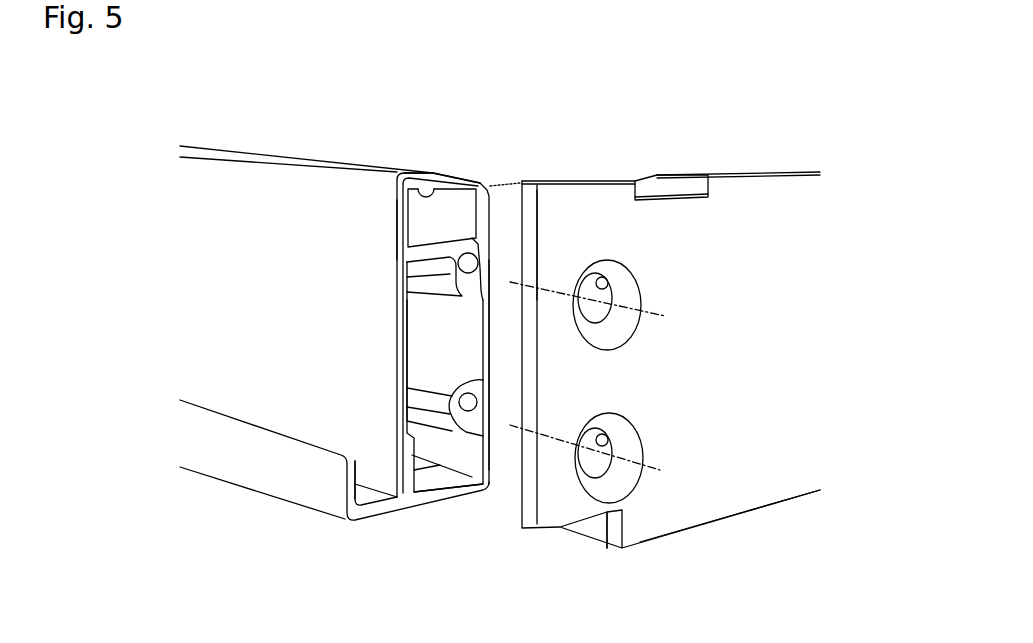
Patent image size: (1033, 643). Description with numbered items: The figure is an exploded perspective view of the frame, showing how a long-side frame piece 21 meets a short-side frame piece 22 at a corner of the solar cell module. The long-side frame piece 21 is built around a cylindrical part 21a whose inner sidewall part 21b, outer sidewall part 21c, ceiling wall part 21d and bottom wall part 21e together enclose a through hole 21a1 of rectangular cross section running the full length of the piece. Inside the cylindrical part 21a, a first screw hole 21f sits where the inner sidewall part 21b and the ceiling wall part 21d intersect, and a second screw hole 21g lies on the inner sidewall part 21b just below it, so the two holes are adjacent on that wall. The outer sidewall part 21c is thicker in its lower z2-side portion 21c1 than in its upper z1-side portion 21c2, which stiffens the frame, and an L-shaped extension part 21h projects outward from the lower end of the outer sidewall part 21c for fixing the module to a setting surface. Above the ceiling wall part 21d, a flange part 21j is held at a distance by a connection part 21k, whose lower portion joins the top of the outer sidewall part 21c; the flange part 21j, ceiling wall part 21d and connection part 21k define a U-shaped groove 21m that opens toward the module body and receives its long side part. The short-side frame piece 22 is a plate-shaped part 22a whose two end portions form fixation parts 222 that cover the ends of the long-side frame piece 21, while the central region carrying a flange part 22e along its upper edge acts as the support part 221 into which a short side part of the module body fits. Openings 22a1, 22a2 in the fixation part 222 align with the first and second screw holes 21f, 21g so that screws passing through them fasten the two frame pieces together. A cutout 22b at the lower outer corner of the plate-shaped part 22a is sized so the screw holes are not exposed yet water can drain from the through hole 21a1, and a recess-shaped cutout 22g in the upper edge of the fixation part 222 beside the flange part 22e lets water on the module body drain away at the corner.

The long-side frame piece 21 is at (249, 130).
The cylindrical part 21a is at (473, 503).
The through hole 21a1 is at (428, 473).
The inner sidewall part 21b is at (494, 372).
The outer sidewall part 21c is at (398, 358).
The z2-side portion 21c1 is at (397, 458).
The z1-side portion 21c2 is at (403, 325).
The ceiling wall part 21d is at (428, 241).
The bottom wall part 21e is at (436, 492).
The first screw hole 21f is at (472, 256).
The second screw hole 21g is at (480, 402).
The extension part 21h is at (322, 504).
The flange part 21j is at (418, 165).
The connection part 21k is at (396, 206).
The groove 21m is at (438, 185).
The short-side frame piece 22 is at (753, 126).
The plate-shaped part 22a is at (761, 497).
The opening 22a1 is at (605, 290).
The opening 22a2 is at (610, 448).
The cutout 22b is at (579, 532).
The flange part 22e is at (776, 170).
The cutout 22g is at (682, 188).
The support part 221 is at (683, 517).
The fixation part 222 is at (600, 192).